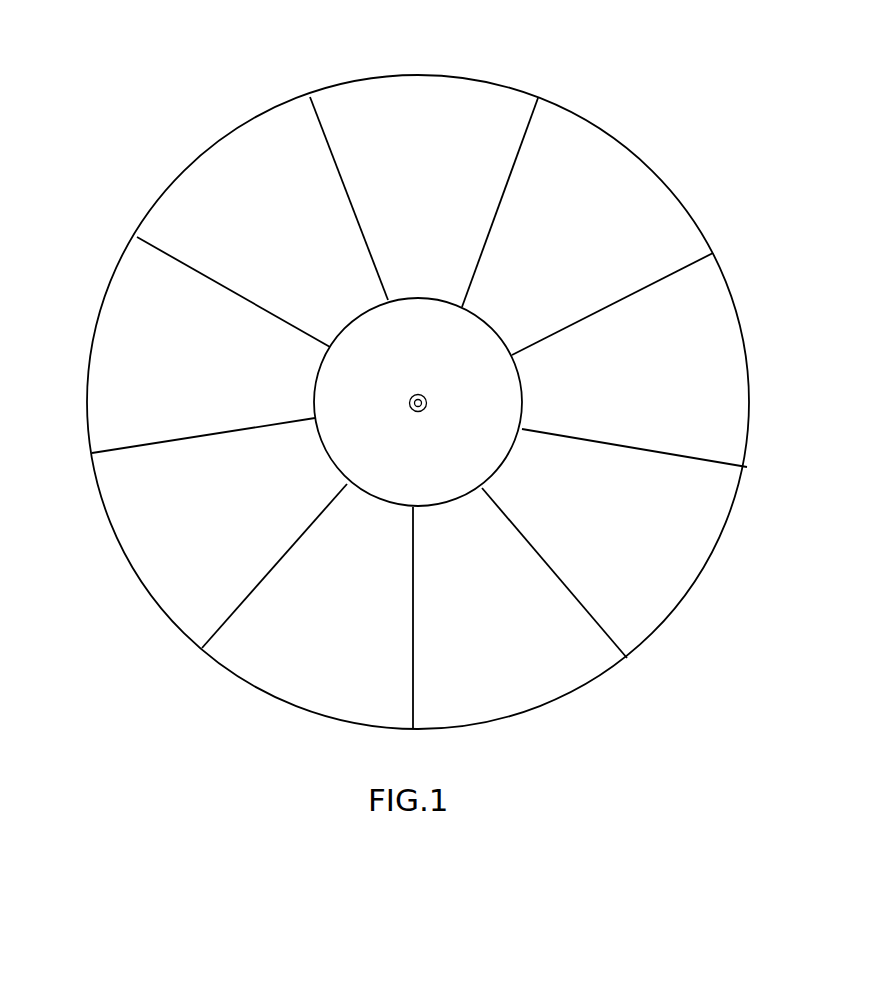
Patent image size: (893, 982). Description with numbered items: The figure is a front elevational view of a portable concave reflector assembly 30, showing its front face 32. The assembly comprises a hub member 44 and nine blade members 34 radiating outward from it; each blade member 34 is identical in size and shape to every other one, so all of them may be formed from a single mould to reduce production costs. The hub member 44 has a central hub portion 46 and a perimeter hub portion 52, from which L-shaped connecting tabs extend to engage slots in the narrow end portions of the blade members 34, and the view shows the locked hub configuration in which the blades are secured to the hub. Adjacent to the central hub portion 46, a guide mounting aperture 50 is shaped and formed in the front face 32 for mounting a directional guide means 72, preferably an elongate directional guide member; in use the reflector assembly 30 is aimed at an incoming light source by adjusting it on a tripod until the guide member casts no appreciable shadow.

The portable concave reflector assembly 30 is at (684, 142).
The front face 32 is at (497, 626).
The blade members 34 is at (418, 122).
The hub member 44 is at (357, 317).
The central hub portion 46 is at (446, 414).
The guide mounting aperture 50 is at (411, 415).
The perimeter hub portion 52 is at (358, 399).
The directional guide means 72 is at (426, 397).